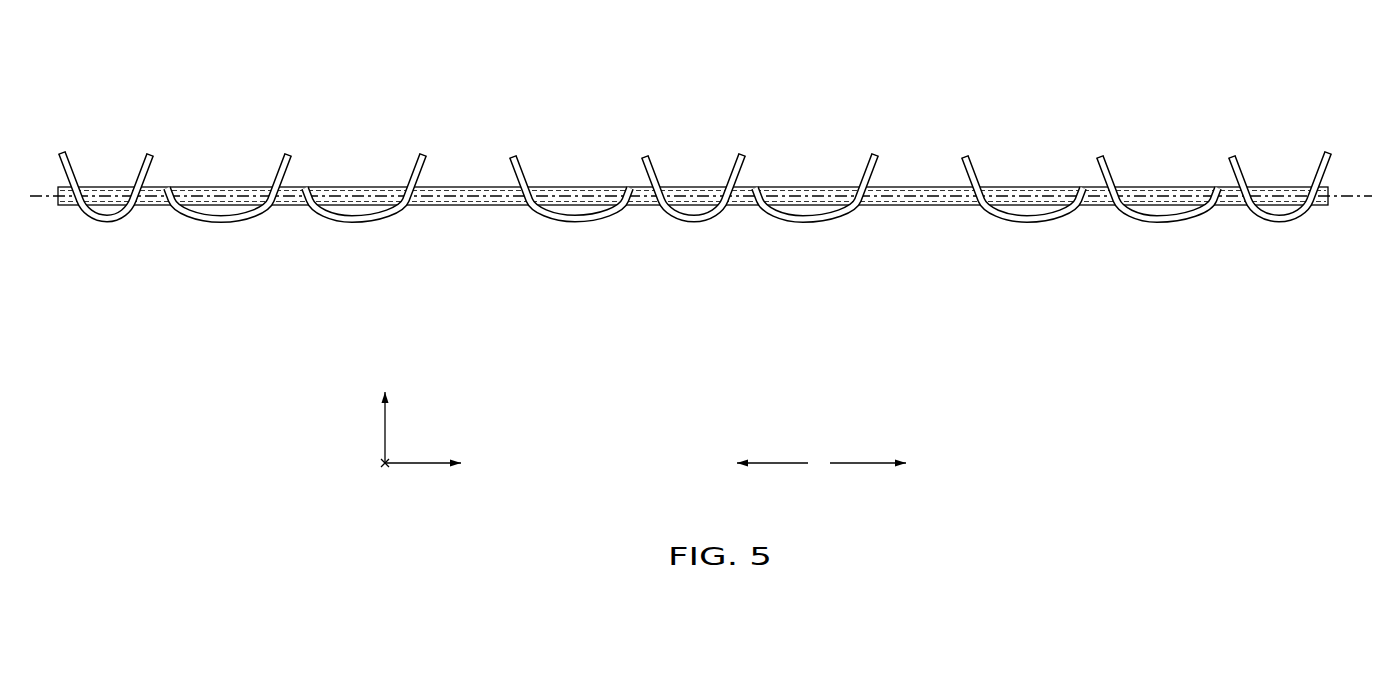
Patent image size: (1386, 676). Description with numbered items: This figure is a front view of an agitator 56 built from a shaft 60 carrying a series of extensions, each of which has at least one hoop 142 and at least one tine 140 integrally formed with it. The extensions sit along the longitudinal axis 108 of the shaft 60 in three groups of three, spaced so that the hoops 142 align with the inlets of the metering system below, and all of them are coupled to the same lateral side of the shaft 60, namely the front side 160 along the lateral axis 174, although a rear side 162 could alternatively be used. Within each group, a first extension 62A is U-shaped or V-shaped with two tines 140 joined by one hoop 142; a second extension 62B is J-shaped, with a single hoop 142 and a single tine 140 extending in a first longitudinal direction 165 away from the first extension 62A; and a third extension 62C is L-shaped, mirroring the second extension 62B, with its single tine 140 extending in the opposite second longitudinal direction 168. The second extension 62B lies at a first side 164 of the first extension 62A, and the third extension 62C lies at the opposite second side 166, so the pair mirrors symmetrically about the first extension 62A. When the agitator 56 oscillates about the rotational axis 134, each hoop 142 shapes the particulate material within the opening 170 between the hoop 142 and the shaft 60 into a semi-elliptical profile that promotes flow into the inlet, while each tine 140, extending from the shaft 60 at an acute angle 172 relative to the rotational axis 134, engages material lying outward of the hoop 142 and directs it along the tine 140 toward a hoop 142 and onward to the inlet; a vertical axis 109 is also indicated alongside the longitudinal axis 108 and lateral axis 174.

The agitator 56 is at (497, 92).
The shaft 60 is at (885, 203).
The first extension 62A is at (690, 152).
The second extension 62B is at (842, 163).
The third extension 62C is at (568, 175).
The longitudinal axis 108 is at (420, 455).
The vertical axis direction 109 is at (383, 425).
The rotational axis 134 is at (43, 195).
The tine 140 is at (418, 165).
The hoop 142 is at (578, 220).
The front side 160 is at (448, 212).
The rear side 162 is at (425, 178).
The first side 164 is at (768, 307).
The first longitudinal direction 165 is at (870, 462).
The second side 166 is at (632, 267).
The second longitudinal direction 168 is at (775, 462).
The opening 170 is at (222, 212).
The angle 172 is at (507, 182).
The lateral axis 174 is at (381, 463).